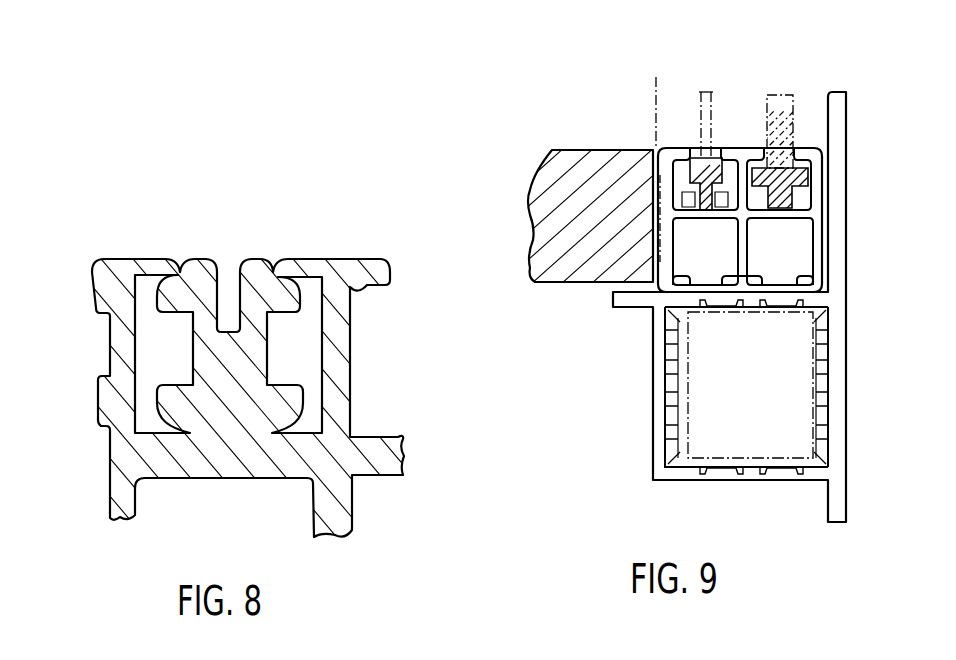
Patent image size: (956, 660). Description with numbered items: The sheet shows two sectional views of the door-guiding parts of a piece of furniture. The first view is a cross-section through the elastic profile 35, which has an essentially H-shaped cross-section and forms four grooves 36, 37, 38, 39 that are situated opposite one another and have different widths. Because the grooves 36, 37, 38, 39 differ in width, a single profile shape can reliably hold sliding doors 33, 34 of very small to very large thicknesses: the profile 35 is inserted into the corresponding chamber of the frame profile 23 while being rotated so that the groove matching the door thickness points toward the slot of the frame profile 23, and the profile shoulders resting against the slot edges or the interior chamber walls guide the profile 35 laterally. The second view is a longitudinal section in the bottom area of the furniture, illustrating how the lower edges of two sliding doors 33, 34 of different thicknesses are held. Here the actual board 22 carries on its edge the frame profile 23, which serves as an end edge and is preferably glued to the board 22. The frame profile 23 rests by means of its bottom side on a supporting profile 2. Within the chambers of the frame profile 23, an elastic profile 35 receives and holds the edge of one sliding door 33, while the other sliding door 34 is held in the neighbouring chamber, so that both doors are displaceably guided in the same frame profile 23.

In FIG. 9, the supporting profile 2 is at (745, 473).
In FIG. 9, the board 22 is at (545, 195).
In FIG. 8, the frame profile 23 is at (122, 484).
In FIG. 9, the frame profile 23 is at (813, 218).
In FIG. 9, the sliding door 33 is at (708, 92).
In FIG. 9, the sliding door 34 is at (793, 96).
In FIG. 8, the elastic profile 35 is at (200, 276).
In FIG. 9, the elastic profile 35 is at (693, 176).
In FIG. 8, the groove 36 is at (228, 293).
In FIG. 8, the groove 37 is at (300, 350).
In FIG. 8, the groove 38 is at (233, 407).
In FIG. 8, the groove 39 is at (157, 352).